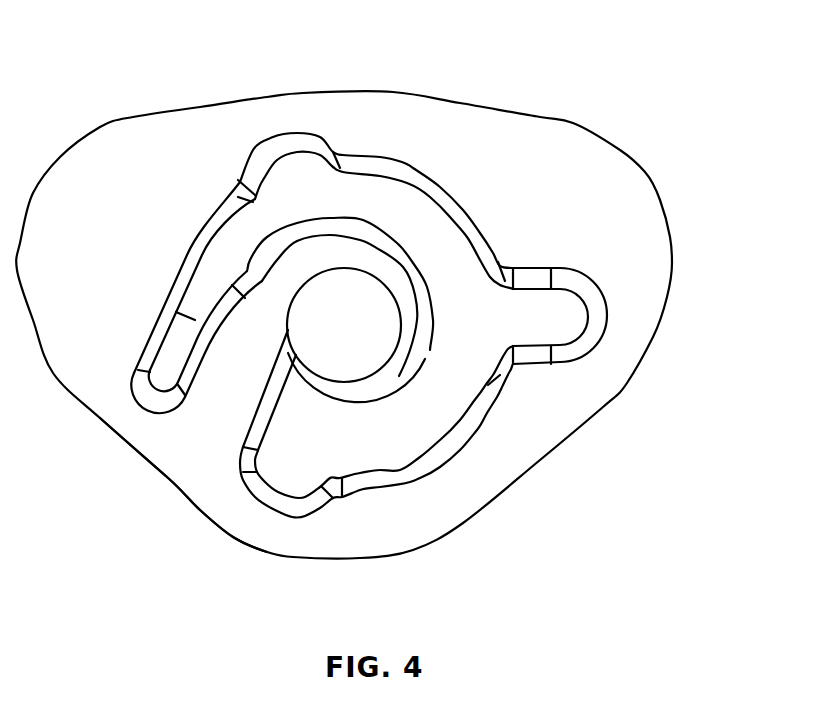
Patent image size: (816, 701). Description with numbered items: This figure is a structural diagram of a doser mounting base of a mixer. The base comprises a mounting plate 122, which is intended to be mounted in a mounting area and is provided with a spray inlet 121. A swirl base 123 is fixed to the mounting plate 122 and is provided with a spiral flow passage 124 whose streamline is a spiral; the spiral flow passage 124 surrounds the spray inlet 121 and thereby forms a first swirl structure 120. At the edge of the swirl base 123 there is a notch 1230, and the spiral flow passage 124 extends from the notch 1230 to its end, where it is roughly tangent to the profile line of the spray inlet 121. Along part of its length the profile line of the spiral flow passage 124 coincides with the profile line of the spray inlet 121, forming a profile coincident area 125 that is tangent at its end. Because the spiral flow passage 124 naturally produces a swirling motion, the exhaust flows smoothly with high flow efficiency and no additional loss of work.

The first swirl structure 120 is at (307, 237).
The spray inlet 121 is at (372, 328).
The mounting plate 122 is at (545, 193).
The swirl base 123 is at (383, 192).
The spiral flow passage 124 is at (247, 300).
The profile coincident area 125 is at (327, 380).
The notch 1230 is at (208, 435).